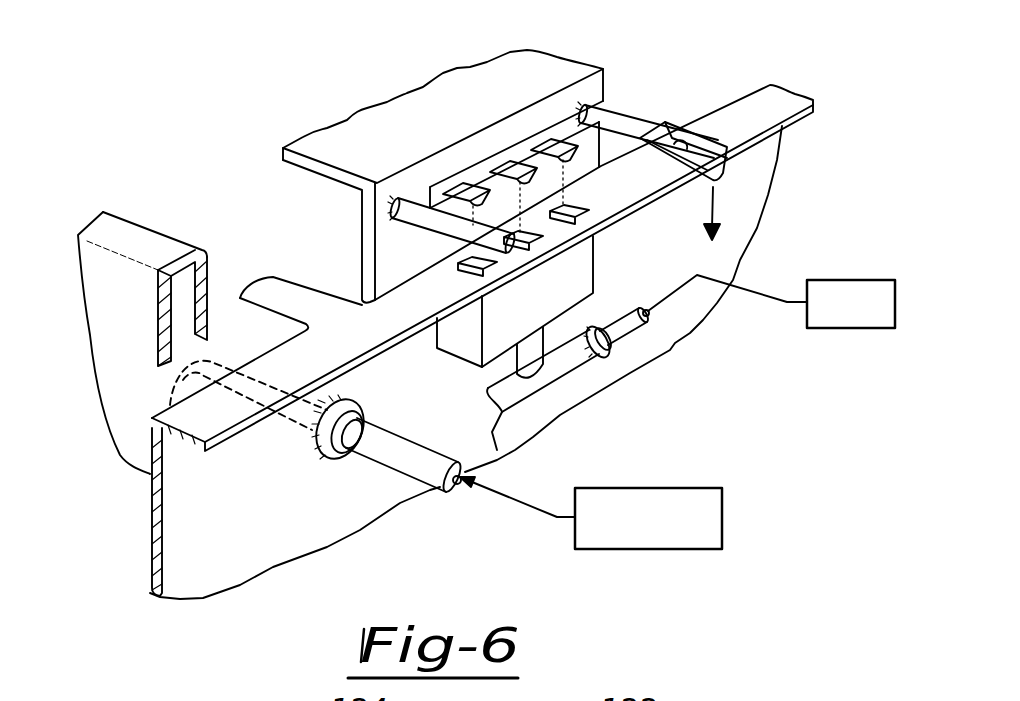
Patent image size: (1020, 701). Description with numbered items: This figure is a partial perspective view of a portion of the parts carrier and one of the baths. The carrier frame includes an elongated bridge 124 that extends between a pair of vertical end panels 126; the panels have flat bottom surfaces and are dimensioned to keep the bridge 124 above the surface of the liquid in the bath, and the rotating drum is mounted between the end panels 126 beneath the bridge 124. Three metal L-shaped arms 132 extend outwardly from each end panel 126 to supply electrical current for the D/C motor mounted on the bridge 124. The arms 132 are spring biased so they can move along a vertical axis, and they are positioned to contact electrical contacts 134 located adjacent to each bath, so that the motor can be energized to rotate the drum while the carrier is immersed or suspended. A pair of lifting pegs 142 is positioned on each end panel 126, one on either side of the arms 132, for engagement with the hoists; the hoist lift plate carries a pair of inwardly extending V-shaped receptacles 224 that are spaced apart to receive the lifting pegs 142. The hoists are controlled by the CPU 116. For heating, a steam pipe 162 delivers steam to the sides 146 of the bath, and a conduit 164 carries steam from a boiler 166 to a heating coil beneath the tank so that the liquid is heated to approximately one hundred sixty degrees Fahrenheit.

The CPU 116 is at (823, 328).
The bridge 124 is at (427, 117).
The end panels 126 is at (400, 252).
The L-shaped arms 132 is at (463, 190).
The electrical contacts 134 is at (486, 269).
The lifting pegs 142 is at (420, 216).
The sides 146 is at (137, 243).
The steam pipe 162 is at (380, 450).
The conduit 164 is at (140, 440).
The boiler 166 is at (722, 533).
The V-shaped receptacles 224 is at (714, 143).